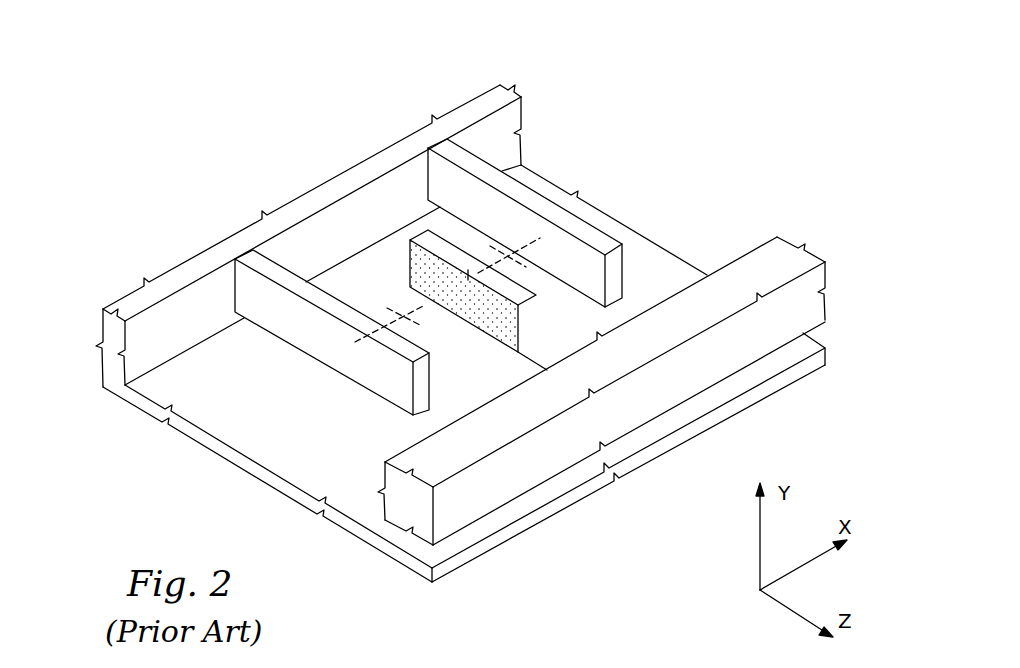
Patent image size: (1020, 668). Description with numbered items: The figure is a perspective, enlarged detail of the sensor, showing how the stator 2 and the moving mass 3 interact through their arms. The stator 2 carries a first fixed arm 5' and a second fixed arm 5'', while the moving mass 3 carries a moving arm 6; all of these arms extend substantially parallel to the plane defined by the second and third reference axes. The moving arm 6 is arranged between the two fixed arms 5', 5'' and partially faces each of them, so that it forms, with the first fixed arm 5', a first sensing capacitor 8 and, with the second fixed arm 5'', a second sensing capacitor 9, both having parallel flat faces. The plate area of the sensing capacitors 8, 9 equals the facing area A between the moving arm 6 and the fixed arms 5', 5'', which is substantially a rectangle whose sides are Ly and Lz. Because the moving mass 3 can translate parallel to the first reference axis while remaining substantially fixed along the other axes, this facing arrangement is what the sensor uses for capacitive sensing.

The stator 2 is at (308, 203).
The moving mass 3 is at (738, 272).
The first fixed arm 5' is at (284, 311).
The second fixed arm 5'' is at (525, 180).
The moving arm 6 is at (558, 343).
The first sensing capacitor 8 is at (402, 313).
The second sensing capacitor 9 is at (505, 258).
The facing area A is at (468, 278).